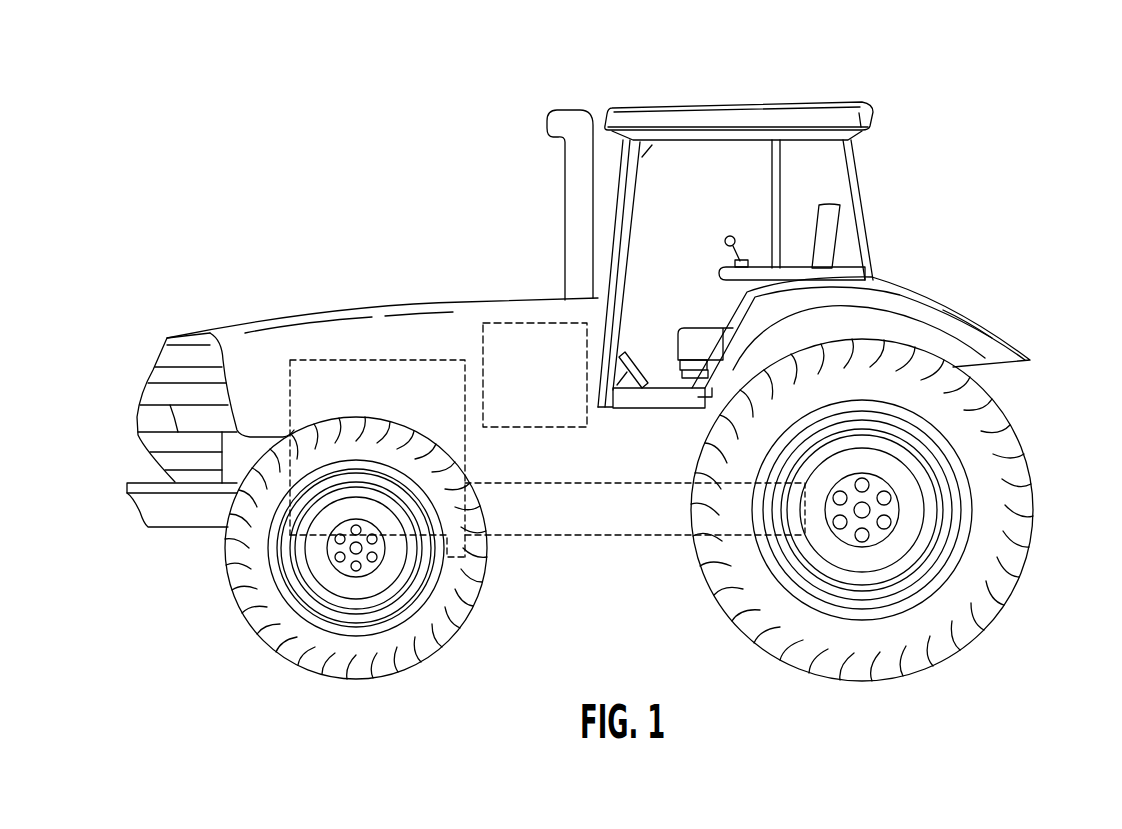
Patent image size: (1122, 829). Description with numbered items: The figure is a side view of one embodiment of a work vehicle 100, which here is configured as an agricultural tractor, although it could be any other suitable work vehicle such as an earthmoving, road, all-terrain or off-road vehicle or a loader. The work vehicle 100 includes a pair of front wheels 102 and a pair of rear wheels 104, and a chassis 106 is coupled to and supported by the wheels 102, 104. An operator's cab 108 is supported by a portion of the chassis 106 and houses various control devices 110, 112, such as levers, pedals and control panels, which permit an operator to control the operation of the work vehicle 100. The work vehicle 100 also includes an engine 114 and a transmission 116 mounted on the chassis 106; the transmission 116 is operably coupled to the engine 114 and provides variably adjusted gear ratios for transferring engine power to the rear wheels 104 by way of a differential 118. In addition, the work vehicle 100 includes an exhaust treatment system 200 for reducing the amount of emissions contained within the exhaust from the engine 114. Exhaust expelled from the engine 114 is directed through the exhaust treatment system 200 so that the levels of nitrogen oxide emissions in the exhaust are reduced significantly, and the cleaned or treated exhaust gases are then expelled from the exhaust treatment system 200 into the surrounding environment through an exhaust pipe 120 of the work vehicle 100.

The work vehicle 100 is at (292, 152).
The front wheels 102 is at (232, 600).
The rear wheels 104 is at (1033, 522).
The chassis 106 is at (537, 537).
The operator's cab 108 is at (860, 196).
The control device 110 is at (727, 237).
The control device 112 is at (622, 366).
The engine 114 is at (373, 357).
The transmission 116 is at (528, 482).
The differential 118 is at (918, 474).
The exhaust pipe 120 is at (570, 210).
The exhaust treatment system 200 is at (513, 322).